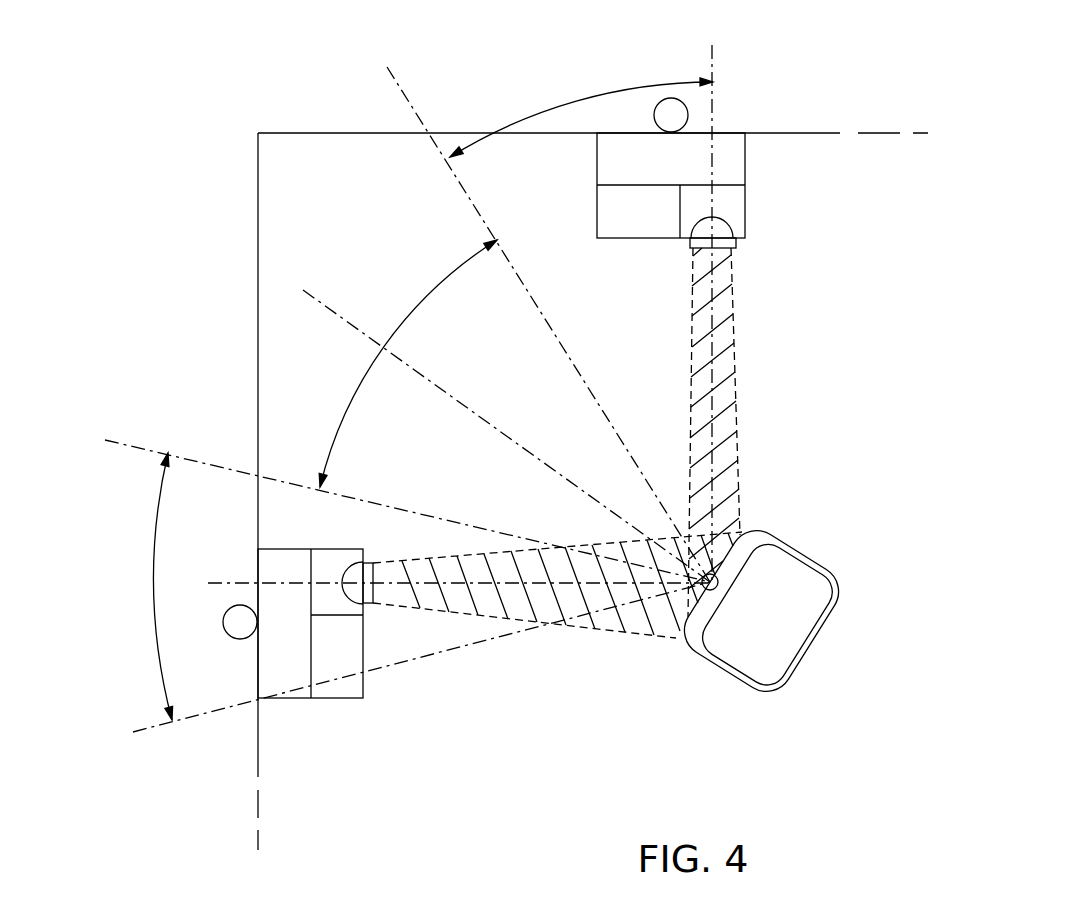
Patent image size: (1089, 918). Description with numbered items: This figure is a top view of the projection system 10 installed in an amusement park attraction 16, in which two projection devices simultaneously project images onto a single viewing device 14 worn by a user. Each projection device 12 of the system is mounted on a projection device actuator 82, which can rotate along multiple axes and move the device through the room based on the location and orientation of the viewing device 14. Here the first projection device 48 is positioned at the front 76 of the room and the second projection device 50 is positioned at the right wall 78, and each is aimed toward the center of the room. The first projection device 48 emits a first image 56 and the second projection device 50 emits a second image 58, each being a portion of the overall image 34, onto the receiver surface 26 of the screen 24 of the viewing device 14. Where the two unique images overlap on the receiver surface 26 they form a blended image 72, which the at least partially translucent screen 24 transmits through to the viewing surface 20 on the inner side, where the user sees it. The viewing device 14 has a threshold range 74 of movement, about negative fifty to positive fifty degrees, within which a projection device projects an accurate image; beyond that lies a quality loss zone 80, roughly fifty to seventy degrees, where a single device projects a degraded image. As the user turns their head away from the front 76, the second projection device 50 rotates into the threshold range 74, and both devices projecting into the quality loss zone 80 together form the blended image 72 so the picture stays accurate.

The projection system 10 is at (238, 122).
The projection device 12 is at (567, 415).
The viewing device 14 is at (800, 545).
The amusement park attraction 16 is at (980, 168).
The viewing surface 20 is at (757, 567).
The screen 24 is at (696, 648).
The receiver surface 26 is at (673, 612).
The image 34 is at (625, 487).
The first projection device 48 is at (290, 549).
The second projection device 50 is at (745, 158).
The first image 56 is at (447, 624).
The second image 58 is at (746, 395).
The blended image 72 is at (722, 536).
The threshold range 74 is at (413, 342).
The front 76 is at (258, 740).
The right wall 78 is at (405, 133).
The quality loss zone 80 is at (598, 93).
The projection device actuator 82 is at (688, 118).